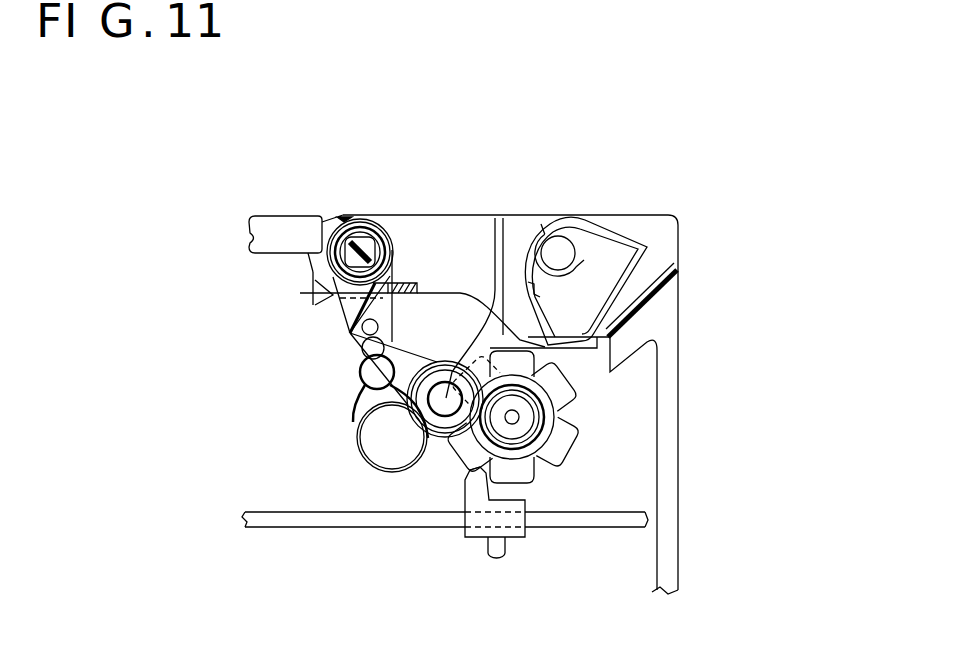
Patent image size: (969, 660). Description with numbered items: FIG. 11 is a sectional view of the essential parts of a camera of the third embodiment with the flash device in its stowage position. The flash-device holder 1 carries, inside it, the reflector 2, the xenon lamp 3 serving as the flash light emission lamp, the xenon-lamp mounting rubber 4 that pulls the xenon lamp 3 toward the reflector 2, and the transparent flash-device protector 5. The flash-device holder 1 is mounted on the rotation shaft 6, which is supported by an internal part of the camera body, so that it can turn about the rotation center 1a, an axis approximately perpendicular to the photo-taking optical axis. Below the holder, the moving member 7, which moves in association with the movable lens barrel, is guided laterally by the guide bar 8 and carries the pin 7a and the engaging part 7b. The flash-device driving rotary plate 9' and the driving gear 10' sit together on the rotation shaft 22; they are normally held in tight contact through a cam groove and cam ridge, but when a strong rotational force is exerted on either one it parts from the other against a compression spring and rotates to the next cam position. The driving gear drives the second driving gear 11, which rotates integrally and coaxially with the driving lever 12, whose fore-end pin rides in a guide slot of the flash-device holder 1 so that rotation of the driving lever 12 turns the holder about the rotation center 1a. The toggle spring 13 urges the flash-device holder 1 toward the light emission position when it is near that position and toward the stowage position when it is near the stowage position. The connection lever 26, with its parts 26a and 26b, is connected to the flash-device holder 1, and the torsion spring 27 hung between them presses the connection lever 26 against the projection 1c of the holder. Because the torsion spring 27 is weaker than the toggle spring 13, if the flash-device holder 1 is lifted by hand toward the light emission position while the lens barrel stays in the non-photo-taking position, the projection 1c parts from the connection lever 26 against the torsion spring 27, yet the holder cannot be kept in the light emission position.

The flash-device holder 1 is at (477, 216).
The rotation center 1a is at (357, 218).
The projection 1c is at (427, 282).
The reflector 2 is at (628, 222).
The xenon lamp 3 is at (562, 245).
The xenon-lamp mounting rubber 4 is at (542, 222).
The flash-device protector 5 is at (678, 256).
The rotation shaft 6 is at (378, 228).
The moving member 7 is at (466, 540).
The pin 7a is at (504, 547).
The engaging part 7b is at (470, 471).
The guide bar 8 is at (615, 522).
The flash-device driving rotary plate 9' is at (610, 389).
The driving gear 10' is at (601, 417).
The second driving gear 11 is at (497, 230).
The driving lever 12 is at (412, 363).
The toggle spring 13 is at (358, 445).
The rotation shaft 22 is at (518, 421).
The connection lever 26 is at (350, 333).
The lever portion 26a is at (340, 228).
The lever pin 26b is at (362, 376).
The torsion spring 27 is at (310, 295).